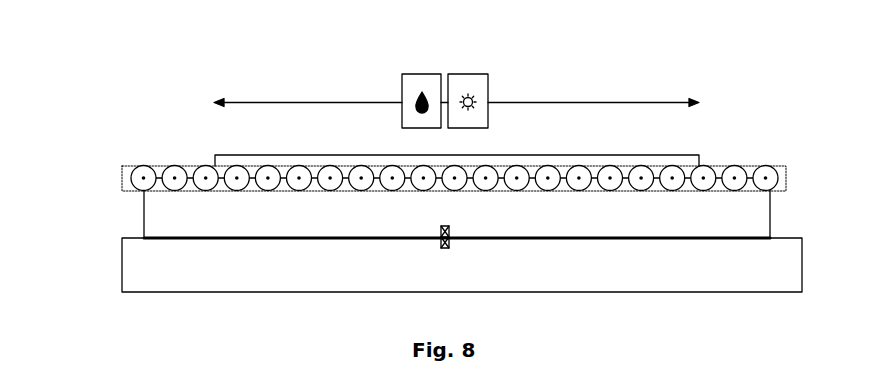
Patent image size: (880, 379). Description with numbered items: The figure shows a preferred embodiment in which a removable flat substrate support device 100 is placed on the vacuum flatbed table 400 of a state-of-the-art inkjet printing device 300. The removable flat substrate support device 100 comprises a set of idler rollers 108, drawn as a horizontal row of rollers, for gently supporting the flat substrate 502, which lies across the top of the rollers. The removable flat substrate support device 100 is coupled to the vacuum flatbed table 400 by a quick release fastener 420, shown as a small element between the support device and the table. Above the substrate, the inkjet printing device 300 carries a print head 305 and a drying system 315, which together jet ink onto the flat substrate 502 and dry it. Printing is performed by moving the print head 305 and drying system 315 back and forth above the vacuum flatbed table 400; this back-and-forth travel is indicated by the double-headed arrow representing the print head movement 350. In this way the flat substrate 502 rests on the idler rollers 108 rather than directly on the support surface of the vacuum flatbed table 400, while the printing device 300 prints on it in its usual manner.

The removable flat substrate support device 100 is at (153, 210).
The set of idler rollers 108 is at (122, 167).
The inkjet printing device 300 is at (596, 75).
The print head 305 is at (423, 83).
The drying system 315 is at (472, 82).
The print head movement 350 is at (272, 103).
The vacuum flatbed table 400 is at (775, 276).
The quick release fastener 420 is at (445, 249).
The flat substrate 502 is at (457, 143).